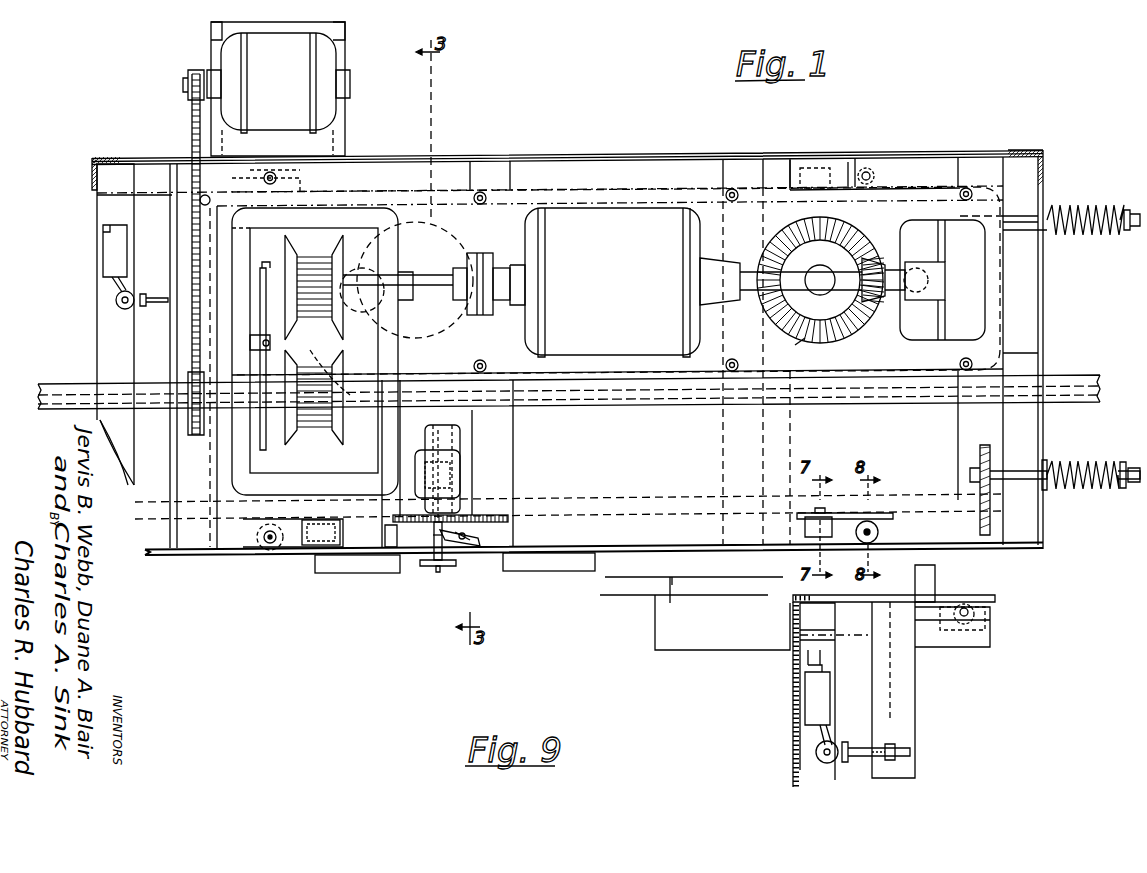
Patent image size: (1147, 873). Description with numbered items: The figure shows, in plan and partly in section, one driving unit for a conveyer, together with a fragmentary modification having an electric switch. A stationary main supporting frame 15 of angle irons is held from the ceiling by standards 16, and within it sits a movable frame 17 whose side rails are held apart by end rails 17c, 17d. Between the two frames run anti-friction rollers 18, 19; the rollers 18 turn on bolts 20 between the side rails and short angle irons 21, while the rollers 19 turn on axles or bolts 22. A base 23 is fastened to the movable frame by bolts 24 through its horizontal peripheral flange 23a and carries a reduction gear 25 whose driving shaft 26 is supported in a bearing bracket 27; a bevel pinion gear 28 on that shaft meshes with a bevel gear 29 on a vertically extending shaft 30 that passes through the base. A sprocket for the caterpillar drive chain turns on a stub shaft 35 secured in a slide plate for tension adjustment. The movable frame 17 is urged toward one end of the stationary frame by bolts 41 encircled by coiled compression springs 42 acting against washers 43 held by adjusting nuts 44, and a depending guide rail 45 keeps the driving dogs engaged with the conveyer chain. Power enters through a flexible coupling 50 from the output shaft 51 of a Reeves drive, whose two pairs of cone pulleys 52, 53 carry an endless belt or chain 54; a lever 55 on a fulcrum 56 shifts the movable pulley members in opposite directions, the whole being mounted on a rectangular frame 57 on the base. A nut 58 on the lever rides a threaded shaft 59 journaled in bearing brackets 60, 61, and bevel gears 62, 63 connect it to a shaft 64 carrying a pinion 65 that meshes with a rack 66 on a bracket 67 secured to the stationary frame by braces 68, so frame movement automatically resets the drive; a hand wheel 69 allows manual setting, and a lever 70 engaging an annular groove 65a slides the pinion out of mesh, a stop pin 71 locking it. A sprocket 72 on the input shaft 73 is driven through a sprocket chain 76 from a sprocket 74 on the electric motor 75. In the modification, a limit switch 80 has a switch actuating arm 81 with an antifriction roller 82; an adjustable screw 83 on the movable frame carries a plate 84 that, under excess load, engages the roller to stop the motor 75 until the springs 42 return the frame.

In FIG. 1, the main supporting frame 15 is at (1003, 150).
In FIG. 9, the main supporting frame 15 is at (995, 600).
In FIG. 1, the standards 16 is at (92, 175).
In FIG. 1, the movable frame 17 is at (715, 450).
In FIG. 9, the movable frame 17 is at (990, 642).
In FIG. 9, the end rail 17c is at (910, 715).
In FIG. 1, the end rail 17d is at (980, 460).
In FIG. 1, the anti-friction rollers 18 is at (880, 171).
In FIG. 9, the anti-friction rollers 18 is at (965, 605).
In FIG. 1, the anti-friction rollers 19 is at (828, 173).
In FIG. 1, the bolts 20 is at (880, 530).
In FIG. 1, the angle irons 21 is at (848, 168).
In FIG. 1, the axles or bolts 22 is at (822, 505).
In FIG. 1, the base 23 is at (612, 362).
In FIG. 1, the horizontal peripheral flange 23a is at (598, 190).
In FIG. 1, the bolts 24 is at (482, 192).
In FIG. 1, the reduction gear 25 is at (605, 282).
In FIG. 1, the driving shaft 26 is at (752, 290).
In FIG. 1, the bearing bracket 27 is at (975, 290).
In FIG. 1, the bevel pinion gear 28 is at (877, 258).
In FIG. 1, the bevel gear 29 is at (805, 338).
In FIG. 1, the vertically extending shaft 30 is at (811, 280).
In FIG. 1, the stub shaft 35 is at (352, 310).
In FIG. 1, the bolts 41 is at (1080, 462).
In FIG. 1, the coiled compression spring 42 is at (1098, 463).
In FIG. 1, the washer 43 is at (1120, 490).
In FIG. 1, the adjusting nut 44 is at (1136, 485).
In FIG. 1, the guide rail 45 is at (160, 415).
In FIG. 1, the flexible coupling 50 is at (478, 255).
In FIG. 1, the output shaft 51 is at (440, 280).
In FIG. 1, the cone pulleys 52 is at (286, 250).
In FIG. 1, the cone pulleys 53 is at (345, 395).
In FIG. 1, the endless belt or chain 54 is at (325, 305).
In FIG. 1, the lever 55 is at (262, 318).
In FIG. 1, the fulcrum 56 is at (250, 342).
In FIG. 1, the rectangular frame 57 is at (380, 320).
In FIG. 1, the nut 58 is at (270, 545).
In FIG. 1, the shaft 59 is at (318, 545).
In FIG. 1, the bearing bracket 60 is at (232, 485).
In FIG. 1, the bearing bracket 61 is at (458, 435).
In FIG. 1, the bevel gear 62 is at (428, 464).
In FIG. 1, the bevel gear 63 is at (465, 478).
In FIG. 1, the shaft 64 is at (455, 565).
In FIG. 1, the pinion 65 is at (434, 535).
In FIG. 1, the annular groove 65a is at (436, 548).
In FIG. 1, the rack 66 is at (510, 518).
In FIG. 1, the bracket 67 is at (393, 575).
In FIG. 1, the braces 68 is at (345, 575).
In FIG. 1, the hand wheel 69 is at (440, 572).
In FIG. 1, the lever 70 is at (468, 547).
In FIG. 1, the stop pin 71 is at (480, 540).
In FIG. 1, the sprocket 72 is at (100, 455).
In FIG. 1, the input shaft 73 is at (352, 395).
In FIG. 1, the sprocket 74 is at (186, 80).
In FIG. 1, the electric motor 75 is at (278, 89).
In FIG. 1, the sprocket chain 76 is at (190, 130).
In FIG. 1, the limit switch 80 is at (110, 248).
In FIG. 9, the limit switch 80 is at (808, 715).
In FIG. 1, the switch actuating arm 81 is at (112, 290).
In FIG. 9, the switch actuating arm 81 is at (815, 740).
In FIG. 1, the antifriction roller 82 is at (118, 305).
In FIG. 9, the antifriction roller 82 is at (818, 760).
In FIG. 9, the adjustable screw 83 is at (865, 760).
In FIG. 1, the plate 84 is at (143, 292).
In FIG. 9, the plate 84 is at (845, 742).